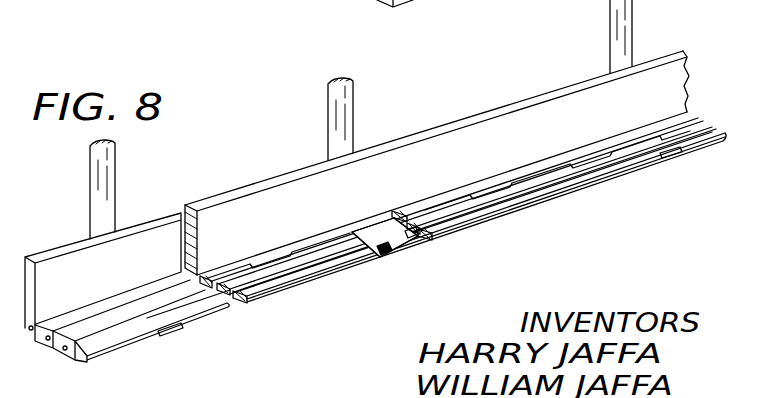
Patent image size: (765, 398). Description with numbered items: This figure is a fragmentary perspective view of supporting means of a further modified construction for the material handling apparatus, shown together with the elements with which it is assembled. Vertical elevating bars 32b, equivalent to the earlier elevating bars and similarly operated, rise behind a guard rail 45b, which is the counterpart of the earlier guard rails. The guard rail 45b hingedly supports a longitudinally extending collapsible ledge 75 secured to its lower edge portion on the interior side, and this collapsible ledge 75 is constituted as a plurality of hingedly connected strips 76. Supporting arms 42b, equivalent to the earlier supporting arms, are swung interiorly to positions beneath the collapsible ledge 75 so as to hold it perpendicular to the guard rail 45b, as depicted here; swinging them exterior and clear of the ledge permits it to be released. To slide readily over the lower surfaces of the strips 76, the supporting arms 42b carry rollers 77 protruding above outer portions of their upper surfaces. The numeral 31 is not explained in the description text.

The support member 31 is at (298, 0).
The vertical elevating bar 32b is at (117, 168).
The supporting arm 42b is at (403, 184).
The guard rail 45b is at (538, 70).
The collapsible ledge 75 is at (575, 190).
The hingedly connected strip 76 is at (31, 332).
The roller 77 is at (422, 240).